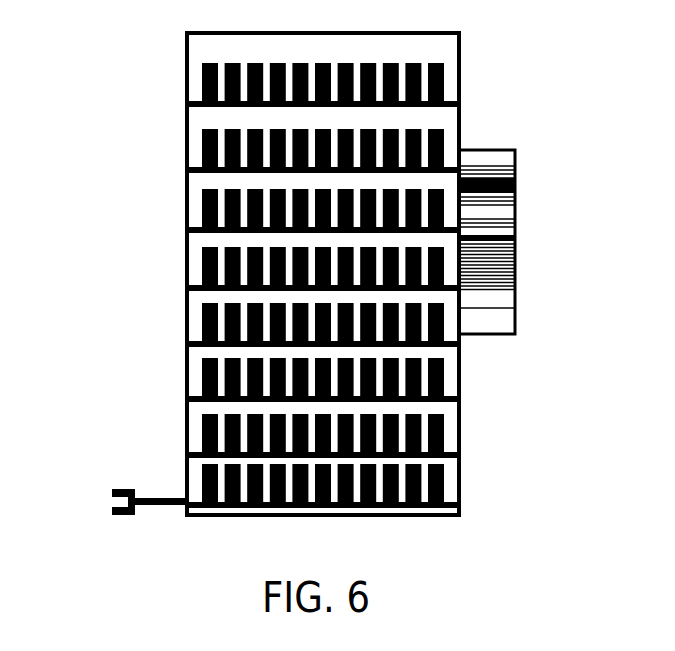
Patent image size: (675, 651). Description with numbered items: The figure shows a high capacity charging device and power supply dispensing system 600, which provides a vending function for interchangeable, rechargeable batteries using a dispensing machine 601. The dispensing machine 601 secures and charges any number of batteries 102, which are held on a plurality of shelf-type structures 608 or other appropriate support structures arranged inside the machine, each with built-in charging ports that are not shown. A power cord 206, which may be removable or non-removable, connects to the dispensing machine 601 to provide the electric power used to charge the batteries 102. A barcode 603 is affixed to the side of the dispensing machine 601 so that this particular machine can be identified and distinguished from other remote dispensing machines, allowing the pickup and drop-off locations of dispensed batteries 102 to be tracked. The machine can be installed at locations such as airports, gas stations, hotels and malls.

The high capacity charging device and power supply dispensing system 600 is at (573, 86).
The dispensing machine 601 is at (180, 323).
The battery 102 is at (200, 249).
The shelf-type structure 608 is at (462, 398).
The barcode 603 is at (517, 238).
The power cord 206 is at (160, 495).